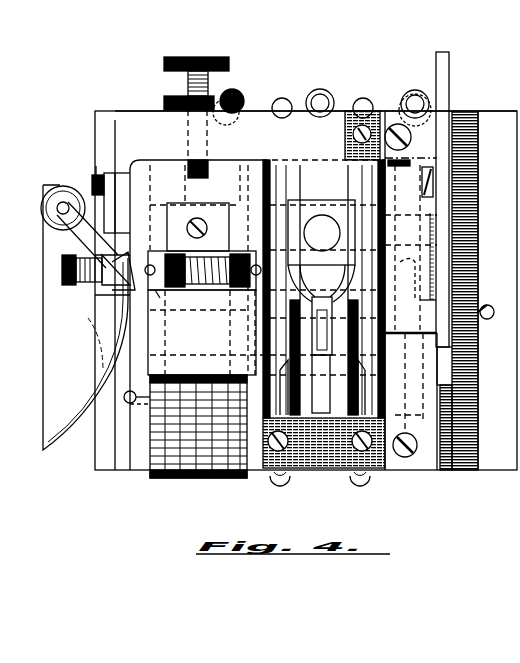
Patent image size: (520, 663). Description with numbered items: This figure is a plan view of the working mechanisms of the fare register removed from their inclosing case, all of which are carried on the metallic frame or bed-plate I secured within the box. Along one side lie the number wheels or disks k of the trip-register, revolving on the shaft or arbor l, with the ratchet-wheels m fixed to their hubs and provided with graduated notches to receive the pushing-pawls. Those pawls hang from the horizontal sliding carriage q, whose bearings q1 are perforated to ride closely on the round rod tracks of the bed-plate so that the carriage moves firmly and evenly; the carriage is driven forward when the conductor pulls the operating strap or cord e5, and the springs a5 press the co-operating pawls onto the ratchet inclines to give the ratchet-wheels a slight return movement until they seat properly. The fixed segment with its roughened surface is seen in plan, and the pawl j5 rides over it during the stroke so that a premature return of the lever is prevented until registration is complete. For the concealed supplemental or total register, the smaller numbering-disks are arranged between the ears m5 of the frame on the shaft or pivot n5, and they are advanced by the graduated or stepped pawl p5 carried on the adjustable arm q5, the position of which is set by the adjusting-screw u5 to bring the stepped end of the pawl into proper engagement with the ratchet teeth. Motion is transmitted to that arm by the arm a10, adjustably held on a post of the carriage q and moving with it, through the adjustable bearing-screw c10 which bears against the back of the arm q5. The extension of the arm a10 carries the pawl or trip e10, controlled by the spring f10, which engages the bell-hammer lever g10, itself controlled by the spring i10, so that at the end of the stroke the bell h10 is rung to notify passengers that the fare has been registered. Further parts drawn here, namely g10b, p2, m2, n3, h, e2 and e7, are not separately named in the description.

The arm a10 is at (316, 122).
The adjustable bearing-screw c10 is at (197, 57).
The pawl j5 is at (410, 115).
The bell h10 is at (98, 362).
The spring i10 is at (92, 258).
The spring f10 is at (104, 176).
The pawl or trip e10 is at (102, 168).
The bell-hammer lever g10 is at (110, 284).
The disk g10b is at (321, 232).
The adjusting-screw u5 is at (205, 222).
The graduated or stepped pawl p5 is at (205, 282).
The adjustable arm q5 is at (167, 297).
The plate p2 is at (180, 350).
The ears m5 is at (185, 425).
The grid block part m2 is at (238, 430).
The pin n3 is at (125, 399).
The shaft or pivot n5 is at (140, 420).
The sliding carriage q is at (295, 285).
The bearings q1 is at (350, 285).
The sleeve h is at (322, 326).
The ratchet-wheels m is at (321, 384).
The number wheels or disks k is at (322, 387).
The block e2 is at (411, 290).
The pulling or operating strap or cord e5 is at (408, 272).
The block e7 is at (425, 345).
The springs a5 is at (449, 86).
The metallic frame or bed-plate I is at (468, 290).
The shaft or arbor l is at (488, 317).